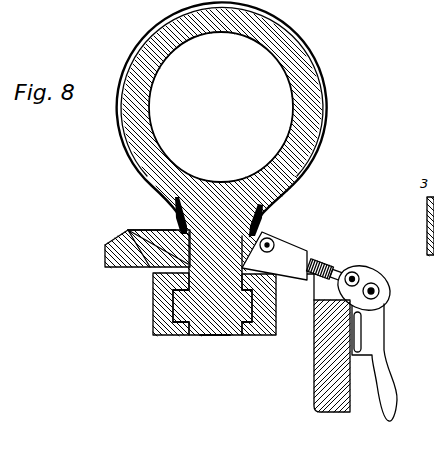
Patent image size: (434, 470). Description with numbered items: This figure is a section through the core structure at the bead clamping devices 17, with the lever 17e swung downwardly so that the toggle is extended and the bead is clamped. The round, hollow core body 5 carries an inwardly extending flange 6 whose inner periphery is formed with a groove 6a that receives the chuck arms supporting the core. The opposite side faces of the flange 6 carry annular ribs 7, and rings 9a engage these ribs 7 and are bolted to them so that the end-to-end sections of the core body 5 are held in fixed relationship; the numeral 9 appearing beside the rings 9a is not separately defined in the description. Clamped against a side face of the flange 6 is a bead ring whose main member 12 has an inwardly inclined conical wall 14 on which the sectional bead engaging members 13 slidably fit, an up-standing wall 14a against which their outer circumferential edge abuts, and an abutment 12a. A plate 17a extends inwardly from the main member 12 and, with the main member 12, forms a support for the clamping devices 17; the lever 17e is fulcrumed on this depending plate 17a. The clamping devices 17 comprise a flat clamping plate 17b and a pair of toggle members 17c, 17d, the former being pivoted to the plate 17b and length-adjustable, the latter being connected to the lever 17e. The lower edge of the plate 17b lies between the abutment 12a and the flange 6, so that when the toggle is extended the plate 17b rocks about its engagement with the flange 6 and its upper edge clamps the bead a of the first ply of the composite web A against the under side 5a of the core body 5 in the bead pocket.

The core body 5 is at (314, 109).
The composite web A is at (116, 129).
The under side of core body 5a is at (221, 107).
The beads a is at (178, 224).
The clamping plate 17b is at (264, 224).
The main member 12 is at (107, 269).
The conical wall 14 is at (128, 270).
The up-standing wall 14a is at (126, 231).
The bead engaging members 13 is at (131, 229).
The flange 6 is at (193, 336).
The groove 6a is at (210, 337).
The annular ribs 7 is at (171, 313).
The pin 9 is at (170, 306).
The rings 9a is at (269, 345).
The abutment 12a is at (277, 276).
The bead clamping devices 17 is at (306, 256).
The toggle member 17c is at (303, 258).
The toggle member 17d is at (363, 273).
The lever 17e is at (374, 340).
The plate 17a is at (343, 413).